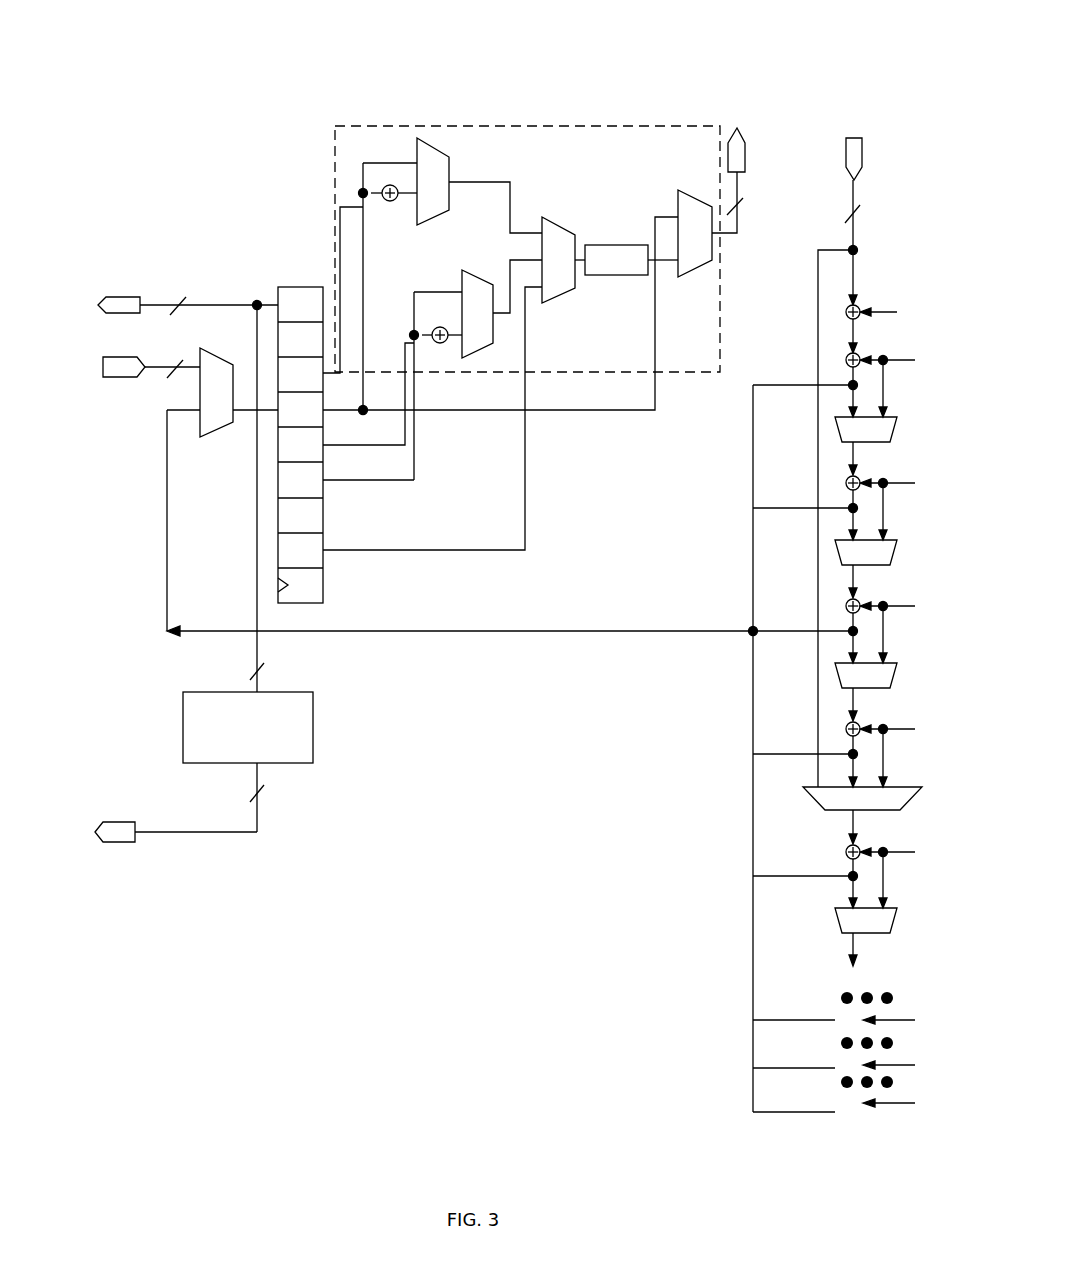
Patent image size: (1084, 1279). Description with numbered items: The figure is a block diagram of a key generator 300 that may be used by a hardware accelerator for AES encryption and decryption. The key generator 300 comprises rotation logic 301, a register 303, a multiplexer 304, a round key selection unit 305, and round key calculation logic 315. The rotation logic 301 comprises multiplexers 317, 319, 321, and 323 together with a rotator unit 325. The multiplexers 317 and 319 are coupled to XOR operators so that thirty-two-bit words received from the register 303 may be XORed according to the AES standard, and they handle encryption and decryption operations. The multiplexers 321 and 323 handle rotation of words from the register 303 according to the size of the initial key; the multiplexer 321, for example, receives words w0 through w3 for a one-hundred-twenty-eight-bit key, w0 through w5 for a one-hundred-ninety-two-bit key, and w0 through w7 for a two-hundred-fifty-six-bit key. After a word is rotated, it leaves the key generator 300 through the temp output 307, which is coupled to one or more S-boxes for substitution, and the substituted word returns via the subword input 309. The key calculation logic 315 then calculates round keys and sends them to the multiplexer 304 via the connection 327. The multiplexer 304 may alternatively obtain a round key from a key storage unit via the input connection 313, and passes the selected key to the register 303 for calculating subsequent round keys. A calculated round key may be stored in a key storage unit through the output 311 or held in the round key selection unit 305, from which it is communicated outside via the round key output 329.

The key generator 300 is at (218, 93).
The rotation logic 301 is at (533, 126).
The register 303 is at (297, 287).
The multiplexer 304 is at (205, 437).
The round key selection unit 305 is at (313, 735).
The temp output 307 is at (736, 80).
The subword input 309 is at (873, 90).
The output 311 is at (127, 297).
The input connection 313 is at (120, 377).
The round key calculation logic 315 is at (671, 870).
The multiplexer 317 is at (449, 165).
The multiplexer 319 is at (462, 270).
The multiplexer 321 is at (570, 217).
The multiplexer 323 is at (683, 277).
The rotator unit 325 is at (610, 275).
The connection 327 is at (497, 631).
The round key output 329 is at (115, 785).